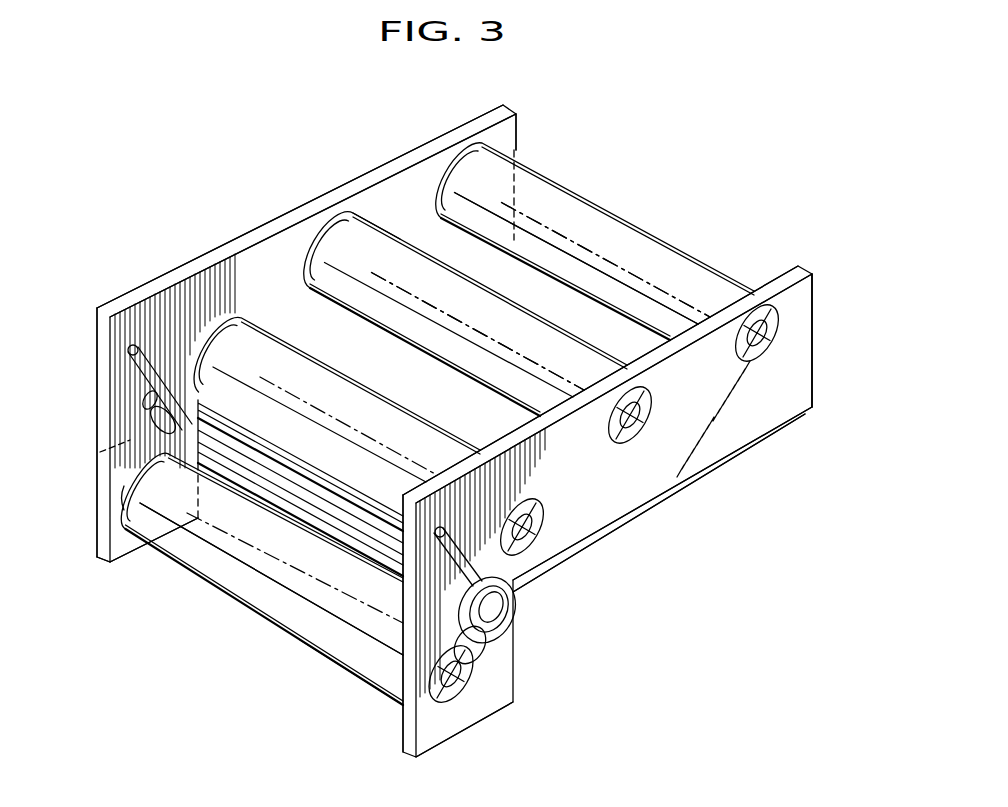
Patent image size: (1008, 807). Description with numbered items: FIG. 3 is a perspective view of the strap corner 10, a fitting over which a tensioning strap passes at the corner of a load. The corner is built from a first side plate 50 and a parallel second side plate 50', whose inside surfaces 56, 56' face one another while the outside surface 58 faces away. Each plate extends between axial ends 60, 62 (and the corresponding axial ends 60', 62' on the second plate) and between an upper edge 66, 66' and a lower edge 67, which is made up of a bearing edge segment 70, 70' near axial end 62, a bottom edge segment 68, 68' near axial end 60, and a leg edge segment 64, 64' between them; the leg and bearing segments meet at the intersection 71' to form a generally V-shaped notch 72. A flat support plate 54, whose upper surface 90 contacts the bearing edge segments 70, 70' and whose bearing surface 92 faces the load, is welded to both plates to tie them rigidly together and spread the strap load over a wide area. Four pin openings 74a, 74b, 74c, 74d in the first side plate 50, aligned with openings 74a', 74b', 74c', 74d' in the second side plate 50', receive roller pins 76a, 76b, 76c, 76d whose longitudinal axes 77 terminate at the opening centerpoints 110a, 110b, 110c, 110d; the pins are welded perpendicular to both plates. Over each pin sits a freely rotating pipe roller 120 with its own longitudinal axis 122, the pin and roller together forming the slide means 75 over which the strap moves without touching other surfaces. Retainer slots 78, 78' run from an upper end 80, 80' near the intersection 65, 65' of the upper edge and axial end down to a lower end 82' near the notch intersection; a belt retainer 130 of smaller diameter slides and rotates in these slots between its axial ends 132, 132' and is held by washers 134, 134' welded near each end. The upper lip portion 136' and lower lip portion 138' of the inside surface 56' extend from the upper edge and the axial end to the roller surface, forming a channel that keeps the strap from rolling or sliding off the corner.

The strap corner 10 is at (250, 155).
The first side plate 50 is at (639, 511).
The second side plate 50' is at (348, 320).
The support plate 54 is at (655, 513).
The inside surface 56 is at (610, 346).
The inside surface of second side plate 56' is at (300, 206).
The outside surface 58 is at (800, 313).
The axial end 60 is at (374, 637).
The axial end of second side plate 60' is at (71, 544).
The axial end 62 is at (842, 340).
The end edge 62' is at (588, 115).
The leg edge segment 64 is at (531, 633).
The leg edge segment of second side plate 64' is at (300, 487).
The intersection 65 is at (322, 667).
The plate end face 65' is at (82, 385).
The upper edge 66 is at (614, 354).
The upper edge of second side plate 66' is at (313, 200).
The lower edge 67 is at (623, 516).
The bottom edge segment 68 is at (471, 743).
The lower extension 68' is at (138, 586).
The bearing edge segment 70 is at (622, 563).
The bearing edge segment of second side plate 70' is at (355, 351).
The intersection of notch 71' is at (175, 352).
The V-shaped notch 72 is at (547, 593).
The pin opening 74a is at (805, 377).
The pin opening 74b is at (693, 467).
The pin opening 74c is at (580, 551).
The pin opening 74d is at (511, 705).
The pin opening of second side plate 74a' is at (595, 204).
The pin opening of second side plate 74b' is at (439, 293).
The pin opening of second side plate 74c' is at (337, 371).
The pin opening of second side plate 74d' is at (104, 532).
The slide means 75 is at (378, 220).
The roller pin 76a is at (767, 350).
The roller pin 76b is at (622, 447).
The roller pin 76c is at (533, 592).
The roller pin 76d is at (445, 705).
The longitudinal axis 77 is at (547, 227).
The retainer slot 78 is at (394, 620).
The retainer slot of second side plate 78' is at (110, 388).
The upper end 80 is at (361, 605).
The pivot pin 80' is at (85, 330).
The hidden pin 82' is at (81, 460).
The upper surface 90 is at (563, 255).
The bearing surface 92 is at (752, 443).
The centerpoint 110a is at (806, 283).
The centerpoint 110b is at (645, 390).
The centerpoint 110c is at (517, 500).
The centerpoint 110d is at (410, 725).
The roller 120 is at (345, 200).
The longitudinal axis 122 is at (541, 297).
The belt retainer 130 is at (187, 560).
The axial end 132 is at (528, 627).
The axial end 132' is at (103, 425).
The washer 134 is at (521, 677).
The washer 134' is at (93, 399).
The upper lip portion 136' is at (315, 176).
The lower lip portion 138' is at (75, 499).